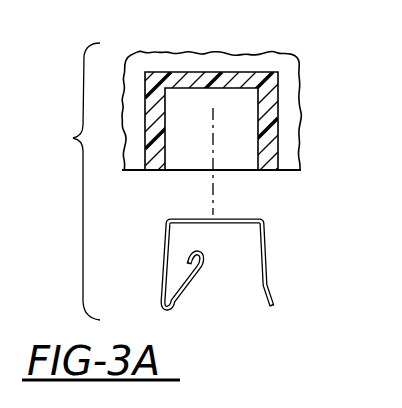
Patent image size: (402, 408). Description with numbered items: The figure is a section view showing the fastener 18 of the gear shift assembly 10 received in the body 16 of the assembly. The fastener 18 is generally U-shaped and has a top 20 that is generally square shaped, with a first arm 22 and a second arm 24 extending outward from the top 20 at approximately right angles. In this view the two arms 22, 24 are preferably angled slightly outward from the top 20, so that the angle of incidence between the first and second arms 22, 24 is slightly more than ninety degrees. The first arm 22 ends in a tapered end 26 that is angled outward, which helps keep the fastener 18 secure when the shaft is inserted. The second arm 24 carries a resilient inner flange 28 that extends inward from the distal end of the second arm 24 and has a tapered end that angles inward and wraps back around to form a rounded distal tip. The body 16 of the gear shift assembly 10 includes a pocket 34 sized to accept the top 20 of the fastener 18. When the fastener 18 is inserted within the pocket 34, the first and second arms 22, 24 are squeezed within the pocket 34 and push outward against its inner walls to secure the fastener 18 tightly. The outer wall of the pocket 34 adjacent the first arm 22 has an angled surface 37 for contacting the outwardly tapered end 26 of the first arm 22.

The gear shift assembly 10 is at (73, 181).
The body 16 is at (267, 62).
The fastener 18 is at (267, 240).
The top 20 is at (250, 218).
The first arm 22 is at (267, 288).
The second arm 24 is at (164, 236).
The tapered end 26 is at (275, 298).
The resilient inner flange 28 is at (193, 268).
The pocket 34 is at (247, 107).
The angled surface 37 is at (257, 165).